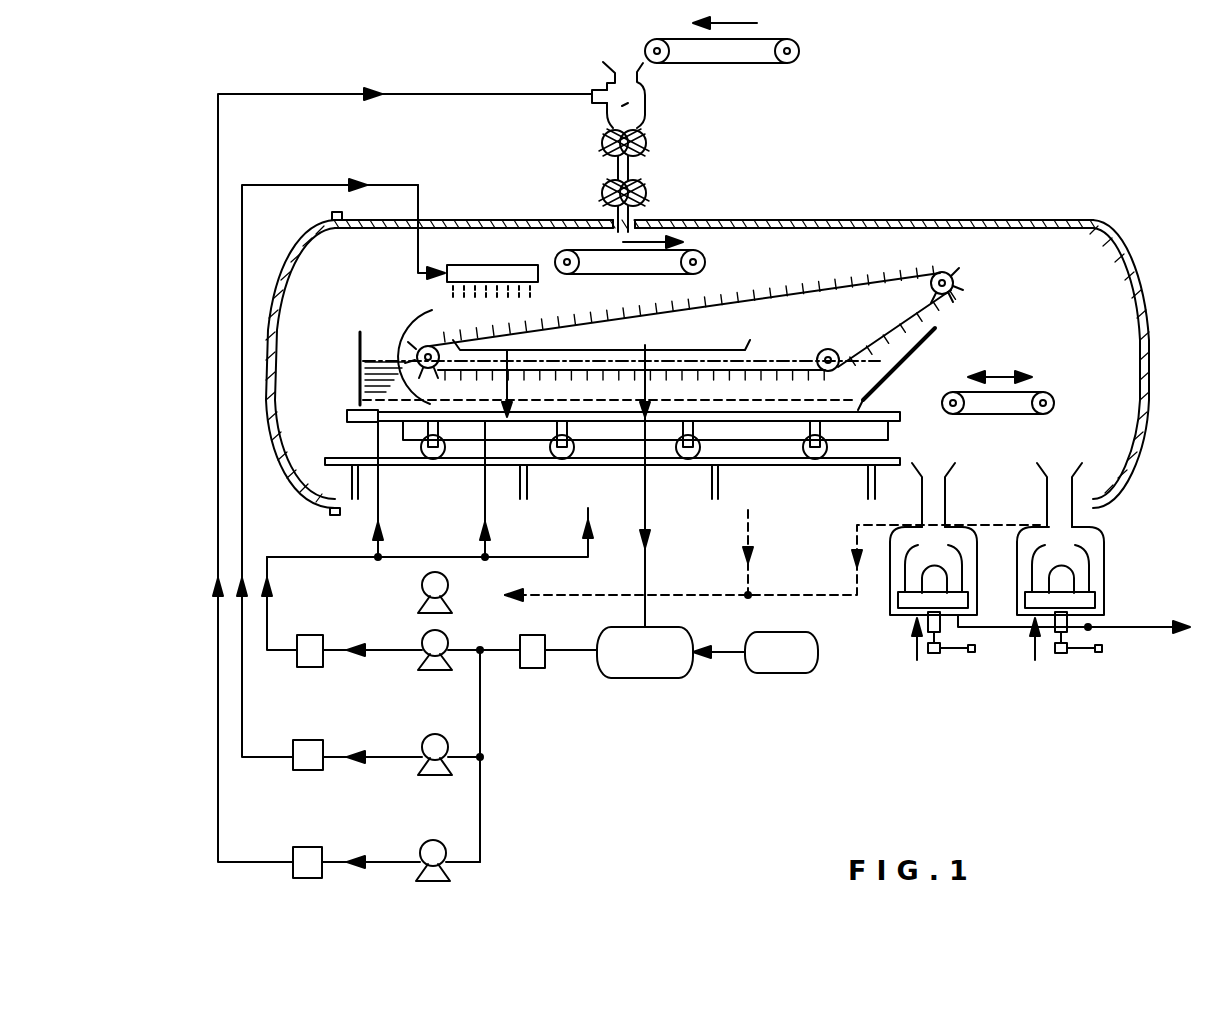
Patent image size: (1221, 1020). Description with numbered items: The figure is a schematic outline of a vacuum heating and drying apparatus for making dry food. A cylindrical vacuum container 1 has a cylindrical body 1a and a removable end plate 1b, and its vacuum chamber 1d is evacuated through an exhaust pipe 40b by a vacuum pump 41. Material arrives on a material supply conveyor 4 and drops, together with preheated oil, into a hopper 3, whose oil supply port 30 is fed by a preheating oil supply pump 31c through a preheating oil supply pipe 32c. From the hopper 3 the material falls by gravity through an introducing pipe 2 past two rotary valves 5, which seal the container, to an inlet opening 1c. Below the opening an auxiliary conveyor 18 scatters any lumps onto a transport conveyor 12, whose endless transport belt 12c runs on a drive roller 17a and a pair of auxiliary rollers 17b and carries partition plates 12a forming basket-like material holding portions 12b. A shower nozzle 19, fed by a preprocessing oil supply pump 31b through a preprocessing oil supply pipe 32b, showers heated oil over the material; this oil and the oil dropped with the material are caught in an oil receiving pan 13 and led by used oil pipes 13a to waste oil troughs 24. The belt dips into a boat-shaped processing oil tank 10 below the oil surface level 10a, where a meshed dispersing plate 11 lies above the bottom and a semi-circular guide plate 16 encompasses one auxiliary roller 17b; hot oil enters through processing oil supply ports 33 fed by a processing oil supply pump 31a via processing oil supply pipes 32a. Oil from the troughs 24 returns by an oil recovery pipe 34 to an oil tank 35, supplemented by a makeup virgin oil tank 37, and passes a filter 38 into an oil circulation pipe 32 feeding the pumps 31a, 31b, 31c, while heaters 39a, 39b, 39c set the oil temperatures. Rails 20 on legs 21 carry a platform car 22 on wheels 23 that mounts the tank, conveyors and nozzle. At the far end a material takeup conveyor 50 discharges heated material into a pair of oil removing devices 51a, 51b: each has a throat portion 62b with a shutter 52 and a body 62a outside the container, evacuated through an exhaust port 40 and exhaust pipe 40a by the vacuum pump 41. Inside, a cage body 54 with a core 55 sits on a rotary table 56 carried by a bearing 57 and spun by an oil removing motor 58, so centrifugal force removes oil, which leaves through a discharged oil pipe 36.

The vacuum container 1 is at (732, 327).
The cylindrical body 1a is at (1058, 220).
The end plate 1b is at (298, 236).
The inlet opening 1c is at (612, 222).
The vacuum chamber 1d is at (1125, 408).
The introducing pipe 2 is at (640, 168).
The hopper 3 is at (628, 103).
The material supply conveyor 4 is at (783, 64).
The rotary valves 5 is at (646, 196).
The processing oil tank 10 is at (933, 333).
The surface level 10a is at (783, 357).
The meshed dispersing plate 11 is at (375, 388).
The transport conveyor 12 is at (995, 290).
The partition plates 12a is at (858, 278).
The material holding portions 12b is at (822, 276).
The endless transport belt 12c is at (905, 263).
The oil receiving pan 13 is at (556, 348).
The used oil pipes 13a is at (548, 440).
The guide plate 16 is at (395, 340).
The drive roller 17a is at (953, 274).
The auxiliary rollers 17b is at (830, 350).
The auxiliary conveyor 18 is at (705, 262).
The shower nozzle 19 is at (476, 265).
The rails 20 is at (330, 493).
The legs 21 is at (345, 478).
The platform car 22 is at (347, 412).
The wheels 23 is at (815, 458).
The waste oil troughs 24 is at (890, 430).
The oil supply port 30 is at (600, 92).
The processing oil supply pump 31a is at (436, 670).
The preprocessing oil supply pump 31b is at (437, 778).
The preheating oil supply pump 31c is at (425, 855).
The oil circulation pipe 32 is at (480, 745).
The processing oil supply pipes 32a is at (270, 625).
The preprocessing oil supply pipe 32b is at (240, 630).
The preheating oil supply pipe 32c is at (217, 682).
The processing oil supply ports 33 is at (590, 425).
The oil recovery pipe 34 is at (645, 565).
The oil tank 35 is at (648, 678).
The discharged oil pipe 36 is at (1160, 630).
The makeup virgin oil tank 37 is at (775, 673).
The filter 38 is at (532, 668).
The heater 39a is at (310, 660).
The heater 39b is at (310, 770).
The heater 39c is at (298, 858).
The exhaust port 40 is at (772, 563).
The exhaust pipe 40a is at (857, 605).
The exhaust pipe 40b is at (745, 528).
The vacuum pump 41 is at (422, 598).
The material takeup conveyor 50 is at (1047, 395).
The oil removing device 51a is at (917, 660).
The oil removing device 51b is at (1035, 660).
The shutter 52 is at (1092, 532).
The cage body 54 is at (1090, 553).
The core 55 is at (1075, 578).
The rotary table 56 is at (1090, 600).
The bearing 57 is at (1062, 655).
The oil removing motor 58 is at (1098, 655).
The body 62a is at (893, 560).
The throat portion 62b is at (948, 470).